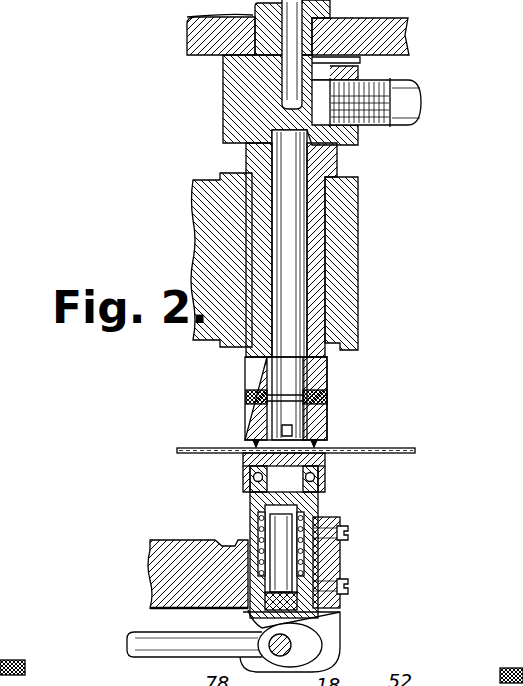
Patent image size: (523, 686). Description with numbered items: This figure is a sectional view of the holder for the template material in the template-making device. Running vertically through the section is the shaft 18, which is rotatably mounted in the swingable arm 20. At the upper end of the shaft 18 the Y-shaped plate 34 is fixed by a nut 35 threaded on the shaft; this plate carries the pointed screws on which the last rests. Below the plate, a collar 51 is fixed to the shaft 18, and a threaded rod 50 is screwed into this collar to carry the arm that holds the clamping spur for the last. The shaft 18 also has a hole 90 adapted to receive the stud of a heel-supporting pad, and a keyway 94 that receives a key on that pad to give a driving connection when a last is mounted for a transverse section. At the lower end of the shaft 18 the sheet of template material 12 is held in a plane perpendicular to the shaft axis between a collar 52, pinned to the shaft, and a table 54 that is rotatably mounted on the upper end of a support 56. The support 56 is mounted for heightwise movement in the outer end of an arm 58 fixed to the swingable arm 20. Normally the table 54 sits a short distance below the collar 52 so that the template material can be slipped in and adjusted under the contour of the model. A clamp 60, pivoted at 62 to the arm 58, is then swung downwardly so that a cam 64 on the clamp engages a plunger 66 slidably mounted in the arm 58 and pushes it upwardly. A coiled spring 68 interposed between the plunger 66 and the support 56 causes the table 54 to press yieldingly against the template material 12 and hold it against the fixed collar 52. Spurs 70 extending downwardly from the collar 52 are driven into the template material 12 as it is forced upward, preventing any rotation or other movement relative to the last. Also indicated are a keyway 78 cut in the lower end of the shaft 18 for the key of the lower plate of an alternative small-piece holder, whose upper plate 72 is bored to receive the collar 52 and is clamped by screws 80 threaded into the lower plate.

The template material 12 is at (402, 454).
The shaft 18 is at (300, 247).
The arm 20 is at (194, 338).
The Y-shaped plate 34 is at (187, 44).
The nut 35 is at (253, 14).
The rod 50 is at (404, 121).
The collar 51 is at (232, 99).
The collar 52 is at (328, 381).
The table 54 is at (246, 462).
The support 56 is at (250, 505).
The arm 58 is at (162, 542).
The clamp 60 is at (168, 652).
The pivot 62 is at (318, 660).
The cam 64 is at (291, 646).
The plunger 66 is at (232, 627).
The coiled spring 68 is at (338, 572).
The spurs 70 is at (252, 438).
The upper plate 72 is at (455, 685).
The keyway 78 is at (282, 430).
The screws 80 is at (4, 660).
The hole 90 is at (365, 64).
The keyway 94 is at (313, 4).